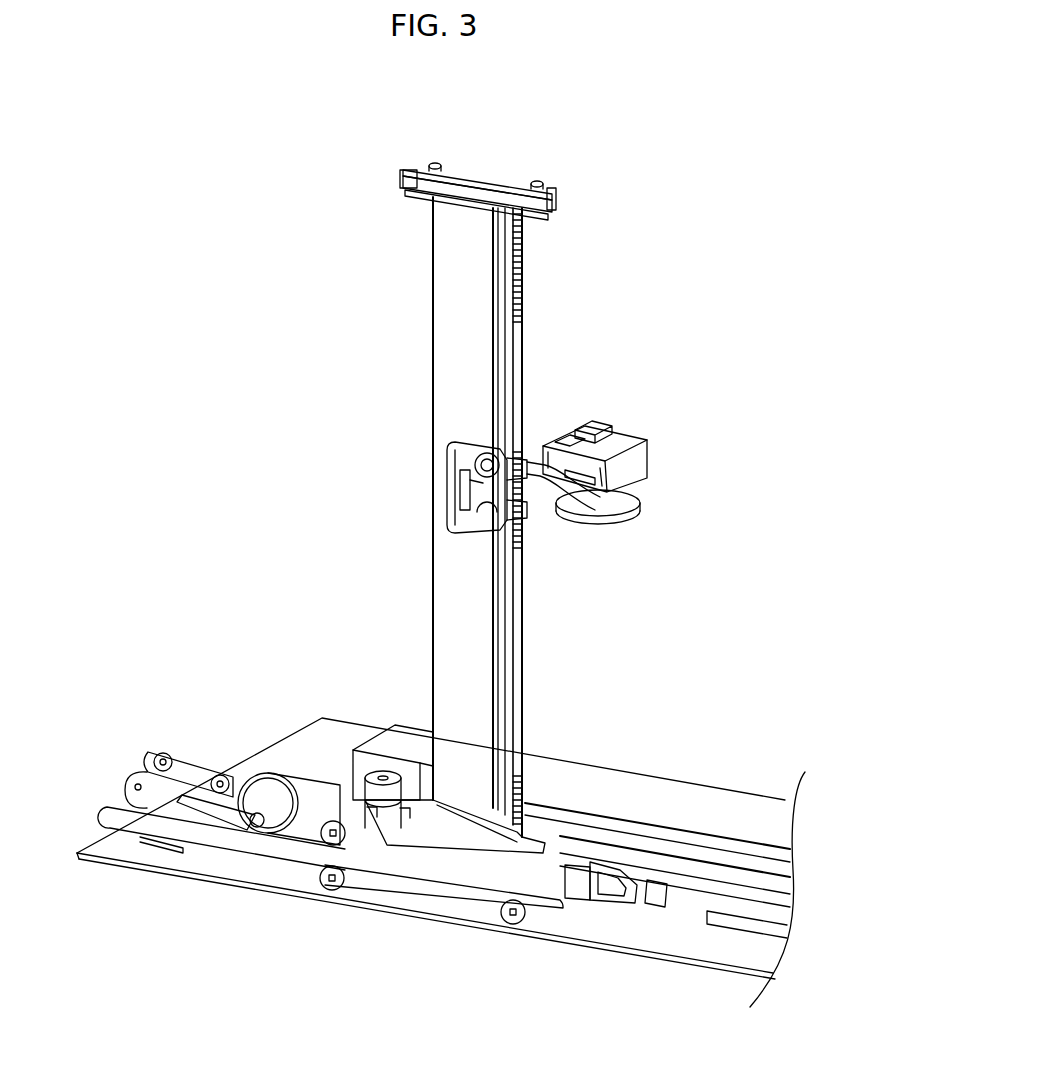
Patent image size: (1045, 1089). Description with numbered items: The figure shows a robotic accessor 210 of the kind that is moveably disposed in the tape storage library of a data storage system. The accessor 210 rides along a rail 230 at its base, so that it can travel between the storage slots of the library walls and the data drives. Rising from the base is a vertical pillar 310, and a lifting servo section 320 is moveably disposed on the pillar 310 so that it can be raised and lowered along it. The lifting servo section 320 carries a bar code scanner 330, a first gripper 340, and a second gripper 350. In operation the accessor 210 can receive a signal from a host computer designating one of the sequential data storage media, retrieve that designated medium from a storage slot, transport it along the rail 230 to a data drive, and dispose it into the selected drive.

The robotic accessor 210 is at (350, 397).
The rail 230 is at (690, 866).
The vertical pillar 310 is at (437, 266).
The lifting servo section 320 is at (545, 500).
The bar code scanner 330 is at (598, 428).
The first gripper 340 is at (627, 428).
The second gripper 350 is at (627, 490).